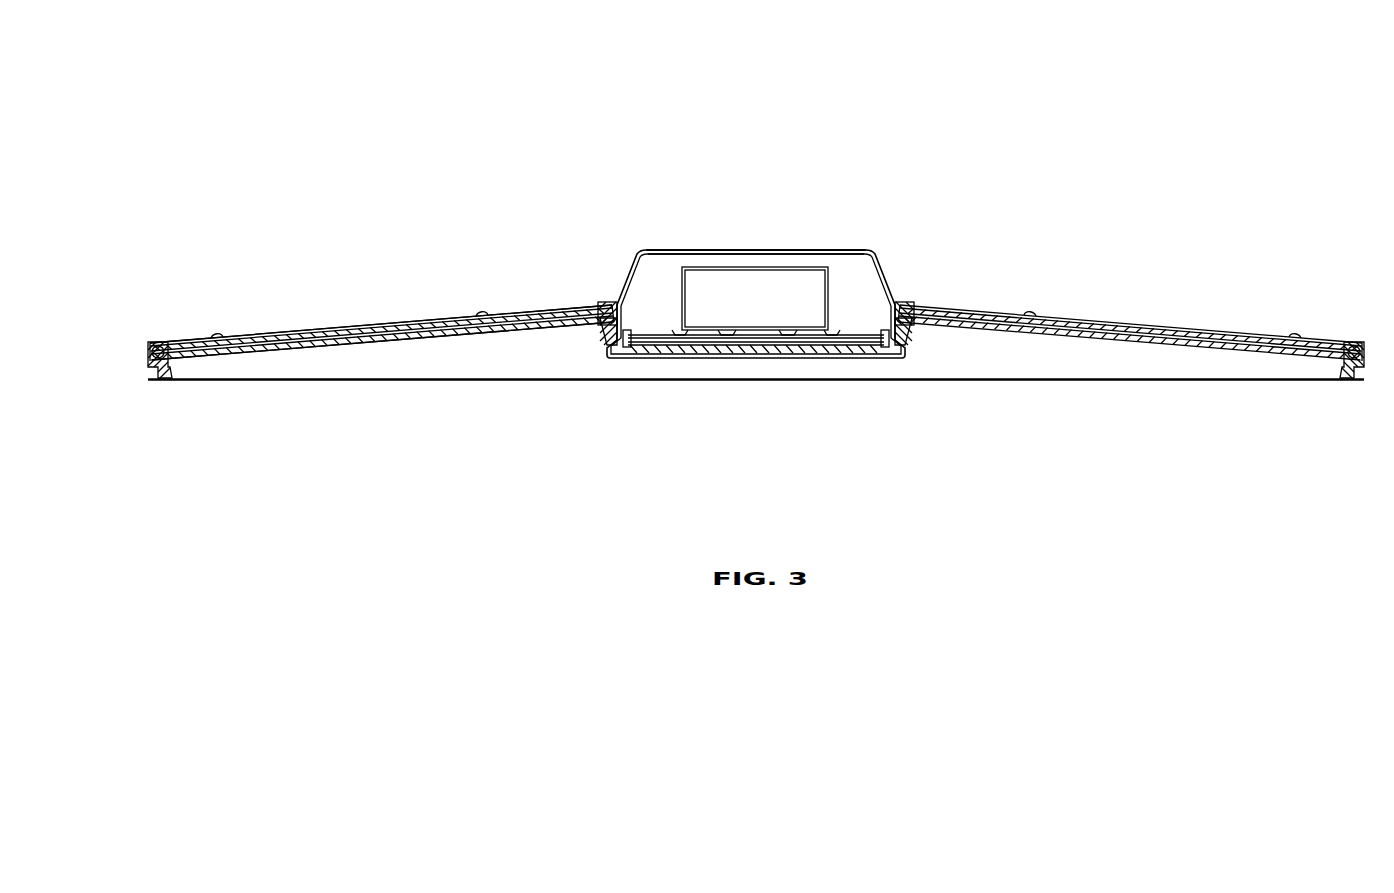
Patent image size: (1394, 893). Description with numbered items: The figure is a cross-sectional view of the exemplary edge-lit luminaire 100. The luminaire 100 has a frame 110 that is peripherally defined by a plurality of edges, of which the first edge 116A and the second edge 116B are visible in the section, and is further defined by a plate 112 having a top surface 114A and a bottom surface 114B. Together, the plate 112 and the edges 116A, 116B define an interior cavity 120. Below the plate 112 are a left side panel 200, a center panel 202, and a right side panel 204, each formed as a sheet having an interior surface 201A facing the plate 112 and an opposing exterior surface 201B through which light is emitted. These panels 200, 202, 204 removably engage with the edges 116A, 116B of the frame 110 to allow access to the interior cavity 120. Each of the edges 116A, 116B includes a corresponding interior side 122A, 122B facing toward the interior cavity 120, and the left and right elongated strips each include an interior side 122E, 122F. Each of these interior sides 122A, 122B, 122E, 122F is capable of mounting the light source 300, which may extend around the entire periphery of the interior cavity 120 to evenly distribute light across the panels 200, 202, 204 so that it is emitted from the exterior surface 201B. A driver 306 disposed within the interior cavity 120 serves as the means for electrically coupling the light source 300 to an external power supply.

The luminaire 100 is at (306, 127).
The frame 110 is at (714, 263).
The plate 112 is at (758, 252).
The top surface 114A is at (680, 250).
The bottom surface 114B is at (668, 264).
The first edge 116A is at (158, 368).
The second edge 116B is at (1357, 368).
The interior cavity 120 is at (858, 297).
The interior side 122A is at (172, 355).
The interior side 122B is at (1338, 357).
The interior side 122E is at (625, 322).
The interior side 122F is at (887, 318).
The left side panel 200 is at (419, 345).
The interior surface 201A is at (381, 284).
The exterior surface 201B is at (383, 375).
The center panel 202 is at (746, 340).
The right side panel 204 is at (1095, 372).
The light source 300 is at (158, 350).
The driver 306 is at (769, 308).